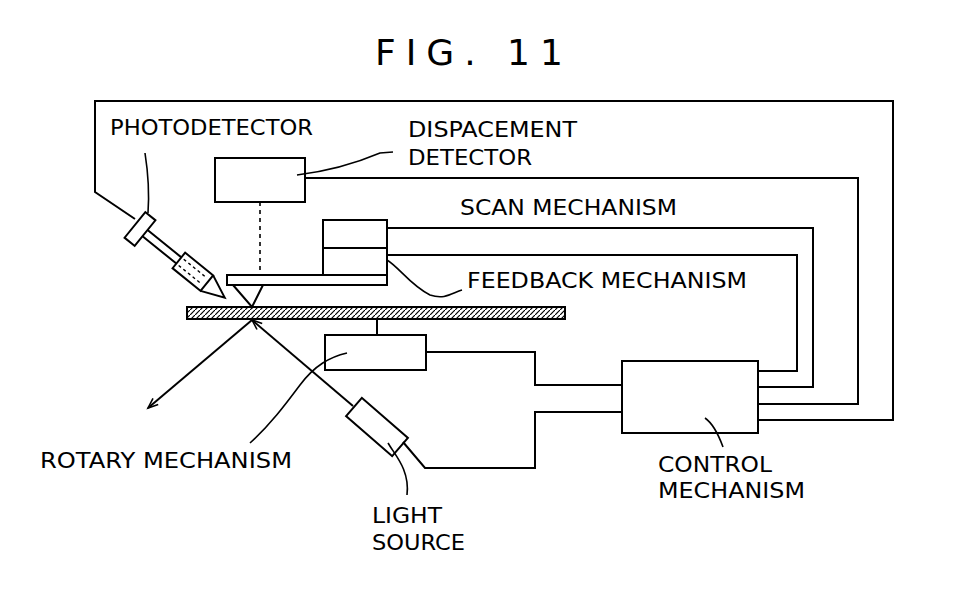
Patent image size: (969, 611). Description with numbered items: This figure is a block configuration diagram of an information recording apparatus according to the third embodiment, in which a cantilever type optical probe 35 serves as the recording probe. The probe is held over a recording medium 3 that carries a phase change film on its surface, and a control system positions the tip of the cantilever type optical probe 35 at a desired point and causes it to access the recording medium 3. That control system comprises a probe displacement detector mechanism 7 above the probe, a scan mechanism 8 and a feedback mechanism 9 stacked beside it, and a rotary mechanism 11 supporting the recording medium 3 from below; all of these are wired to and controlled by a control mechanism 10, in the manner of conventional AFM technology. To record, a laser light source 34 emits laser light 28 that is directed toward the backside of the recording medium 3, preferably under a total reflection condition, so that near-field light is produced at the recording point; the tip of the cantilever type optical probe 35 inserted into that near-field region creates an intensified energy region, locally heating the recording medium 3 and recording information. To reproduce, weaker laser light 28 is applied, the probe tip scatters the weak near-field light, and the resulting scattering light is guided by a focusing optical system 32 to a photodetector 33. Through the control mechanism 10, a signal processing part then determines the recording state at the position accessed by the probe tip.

The recording medium 3 is at (195, 328).
The probe displacement detector mechanism 7 is at (297, 173).
The scan mechanism 8 is at (375, 233).
The feedback mechanism 9 is at (375, 262).
The control mechanism 10 is at (688, 361).
The rotary mechanism 11 is at (407, 370).
The laser light 28 is at (193, 373).
The focusing optical system 32 is at (177, 267).
The photodetector 33 is at (130, 238).
The laser light source 34 is at (380, 448).
The cantilever type optical probe 35 is at (273, 273).